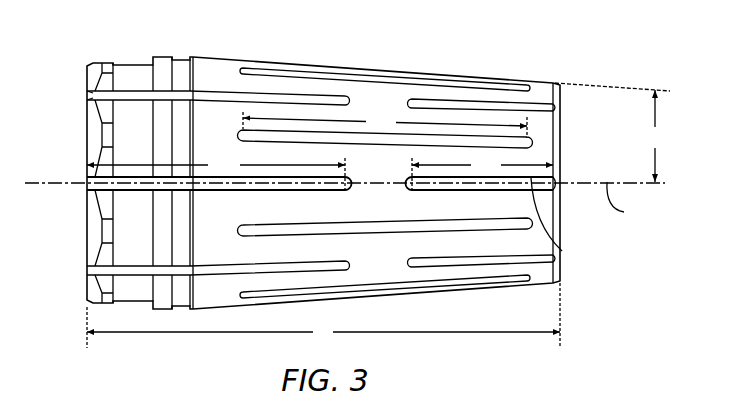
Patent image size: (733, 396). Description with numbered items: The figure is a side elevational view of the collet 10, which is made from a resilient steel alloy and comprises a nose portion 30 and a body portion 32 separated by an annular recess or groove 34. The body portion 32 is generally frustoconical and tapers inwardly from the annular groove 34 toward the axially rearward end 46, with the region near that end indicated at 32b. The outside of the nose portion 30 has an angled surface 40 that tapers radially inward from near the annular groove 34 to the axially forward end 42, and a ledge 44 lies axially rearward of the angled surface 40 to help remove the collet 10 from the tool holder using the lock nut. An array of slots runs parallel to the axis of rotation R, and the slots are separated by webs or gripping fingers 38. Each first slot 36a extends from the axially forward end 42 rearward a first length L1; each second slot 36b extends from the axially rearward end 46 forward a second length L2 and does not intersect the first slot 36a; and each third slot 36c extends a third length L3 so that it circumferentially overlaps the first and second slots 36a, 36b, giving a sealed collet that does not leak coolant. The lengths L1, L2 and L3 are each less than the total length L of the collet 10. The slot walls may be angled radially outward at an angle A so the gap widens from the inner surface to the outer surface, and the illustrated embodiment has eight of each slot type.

The collet 10 is at (615, 50).
The nose portion 30 is at (92, 57).
The body portion 32 is at (373, 57).
The second end of collet body 32b is at (562, 251).
The annular groove 34 is at (138, 57).
The first slot 36a is at (135, 176).
The second slot 36b is at (427, 99).
The third slot 36c is at (485, 136).
The gripping fingers 38 is at (290, 115).
The angled surface 40 is at (97, 238).
The axially forward end 42 is at (83, 100).
The ledge 44 is at (114, 82).
The axially rearward end 46 is at (565, 148).
The total length L is at (323, 315).
The first length L1 is at (216, 173).
The second length L2 is at (482, 173).
The third length L3 is at (385, 122).
The angle A is at (612, 132).
The axis of rotation R is at (624, 203).